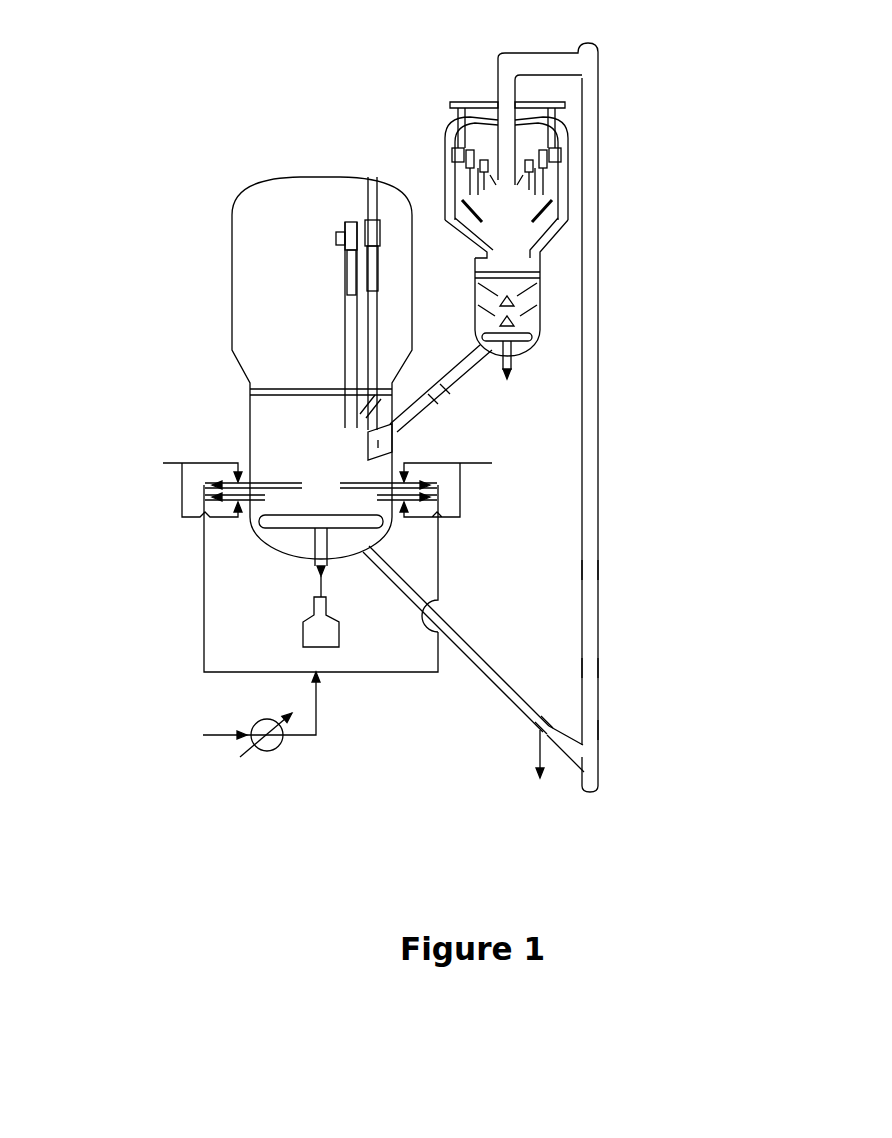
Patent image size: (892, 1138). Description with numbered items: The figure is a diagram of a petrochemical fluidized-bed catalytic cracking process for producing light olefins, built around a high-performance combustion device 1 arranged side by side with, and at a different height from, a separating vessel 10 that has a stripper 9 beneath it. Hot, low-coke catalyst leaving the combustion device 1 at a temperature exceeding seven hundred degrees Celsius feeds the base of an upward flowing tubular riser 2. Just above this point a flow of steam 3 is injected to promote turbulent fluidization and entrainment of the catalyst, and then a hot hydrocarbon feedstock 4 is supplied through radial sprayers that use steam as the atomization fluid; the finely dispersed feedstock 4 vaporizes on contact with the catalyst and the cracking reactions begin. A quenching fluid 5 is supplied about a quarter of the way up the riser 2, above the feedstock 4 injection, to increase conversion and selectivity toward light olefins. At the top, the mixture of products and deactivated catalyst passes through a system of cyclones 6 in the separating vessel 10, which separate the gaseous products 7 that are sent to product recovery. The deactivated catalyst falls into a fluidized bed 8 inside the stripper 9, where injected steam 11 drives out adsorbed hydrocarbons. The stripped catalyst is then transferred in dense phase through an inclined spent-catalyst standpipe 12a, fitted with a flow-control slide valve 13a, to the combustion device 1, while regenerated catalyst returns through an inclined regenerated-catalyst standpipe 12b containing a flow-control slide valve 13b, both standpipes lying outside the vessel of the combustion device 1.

The combustion device 1 is at (243, 188).
The riser 2 is at (592, 348).
The flow of steam 3 is at (603, 734).
The feedstock 4 is at (560, 688).
The quenching fluid 5 is at (560, 590).
The system of cyclones 6 is at (497, 221).
The gaseous products 7 is at (470, 95).
The fluidized bed 8 is at (527, 264).
The stripper 9 is at (540, 320).
The separating vessel 10 is at (568, 175).
The steam 11 is at (507, 380).
The spent-catalyst standpipe 12a is at (405, 437).
The regenerated-catalyst standpipe 12b is at (468, 677).
The flow-control slide valve 13a is at (437, 403).
The flow-control slide valve 13b is at (544, 774).